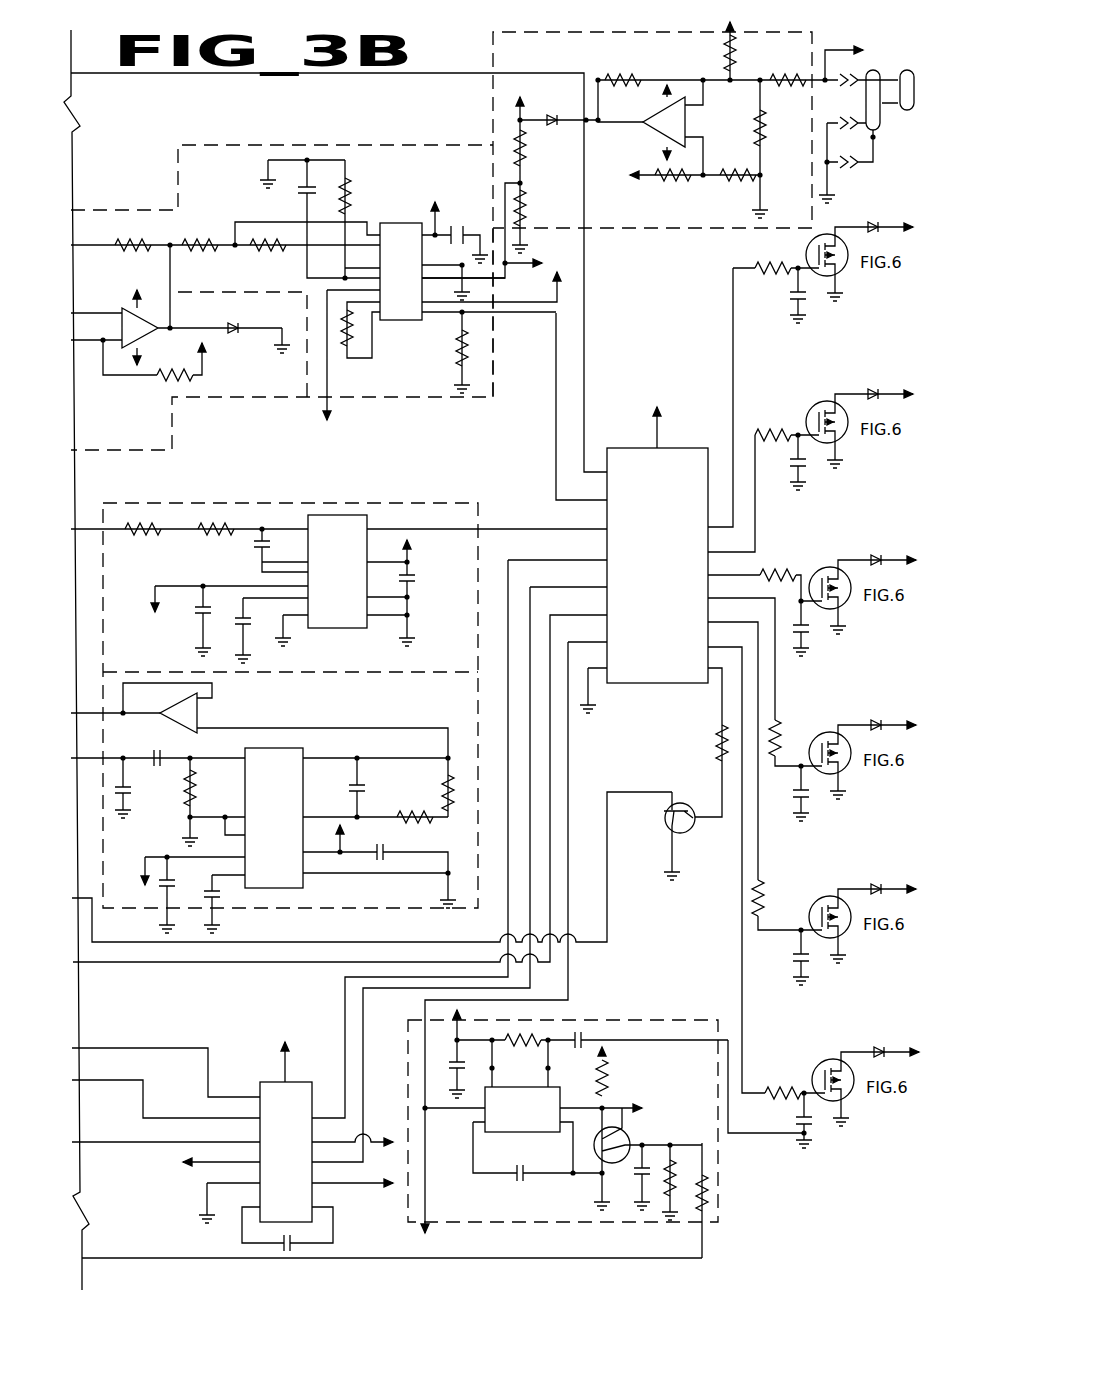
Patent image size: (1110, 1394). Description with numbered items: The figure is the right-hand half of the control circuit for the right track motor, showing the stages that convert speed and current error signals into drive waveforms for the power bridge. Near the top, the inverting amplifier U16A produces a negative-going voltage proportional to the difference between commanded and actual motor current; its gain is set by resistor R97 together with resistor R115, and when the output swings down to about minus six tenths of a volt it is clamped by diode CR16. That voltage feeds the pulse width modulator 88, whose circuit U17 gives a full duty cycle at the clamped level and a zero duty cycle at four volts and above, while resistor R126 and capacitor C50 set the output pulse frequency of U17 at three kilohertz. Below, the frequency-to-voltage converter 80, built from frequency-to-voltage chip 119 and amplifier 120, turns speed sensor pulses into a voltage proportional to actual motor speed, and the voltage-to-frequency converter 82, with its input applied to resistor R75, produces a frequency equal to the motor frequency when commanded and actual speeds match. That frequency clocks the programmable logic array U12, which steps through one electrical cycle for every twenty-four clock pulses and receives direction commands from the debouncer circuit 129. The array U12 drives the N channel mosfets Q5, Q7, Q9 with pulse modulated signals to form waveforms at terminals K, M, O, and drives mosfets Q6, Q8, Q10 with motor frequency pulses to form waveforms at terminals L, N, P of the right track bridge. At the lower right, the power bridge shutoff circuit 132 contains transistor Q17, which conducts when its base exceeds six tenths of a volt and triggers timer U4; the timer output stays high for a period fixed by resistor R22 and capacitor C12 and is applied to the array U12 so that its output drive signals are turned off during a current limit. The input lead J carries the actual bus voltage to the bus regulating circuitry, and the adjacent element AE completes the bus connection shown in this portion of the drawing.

The pulse width modulator 88 is at (333, 148).
The resistor R97 is at (146, 246).
The capacitor C50 is at (303, 186).
The resistor R126 is at (355, 186).
The circuit U17 is at (404, 322).
The inverting amplifier U16A is at (152, 306).
The diode CR16 is at (234, 340).
The resistor R115 is at (170, 381).
The voltage-to-frequency converter 82 is at (371, 503).
The resistor R75 is at (138, 535).
The amplifier 120 is at (200, 712).
The frequency-to-voltage chip 119 is at (303, 888).
The frequency-to-voltage converter 80 is at (285, 843).
The debouncer circuit 129 is at (268, 1082).
The power bridge shutoff circuit 132 is at (600, 1120).
The timer U4 is at (538, 1133).
The resistor R22 is at (523, 1038).
The capacitor C12 is at (585, 1035).
The transistor Q17 is at (633, 1124).
The programmable logic array U12 is at (660, 684).
The input lead J is at (823, 66).
The transformer AE is at (878, 100).
The mosfet Q5 is at (807, 251).
The mosfet Q6 is at (807, 416).
The mosfet Q7 is at (822, 572).
The mosfet Q8 is at (820, 738).
The mosfet Q9 is at (815, 900).
The mosfet Q10 is at (822, 1068).
The terminal K is at (903, 227).
The terminal L is at (903, 394).
The terminal M is at (905, 560).
The terminal N is at (904, 725).
The terminal O is at (905, 889).
The terminal P is at (906, 1052).